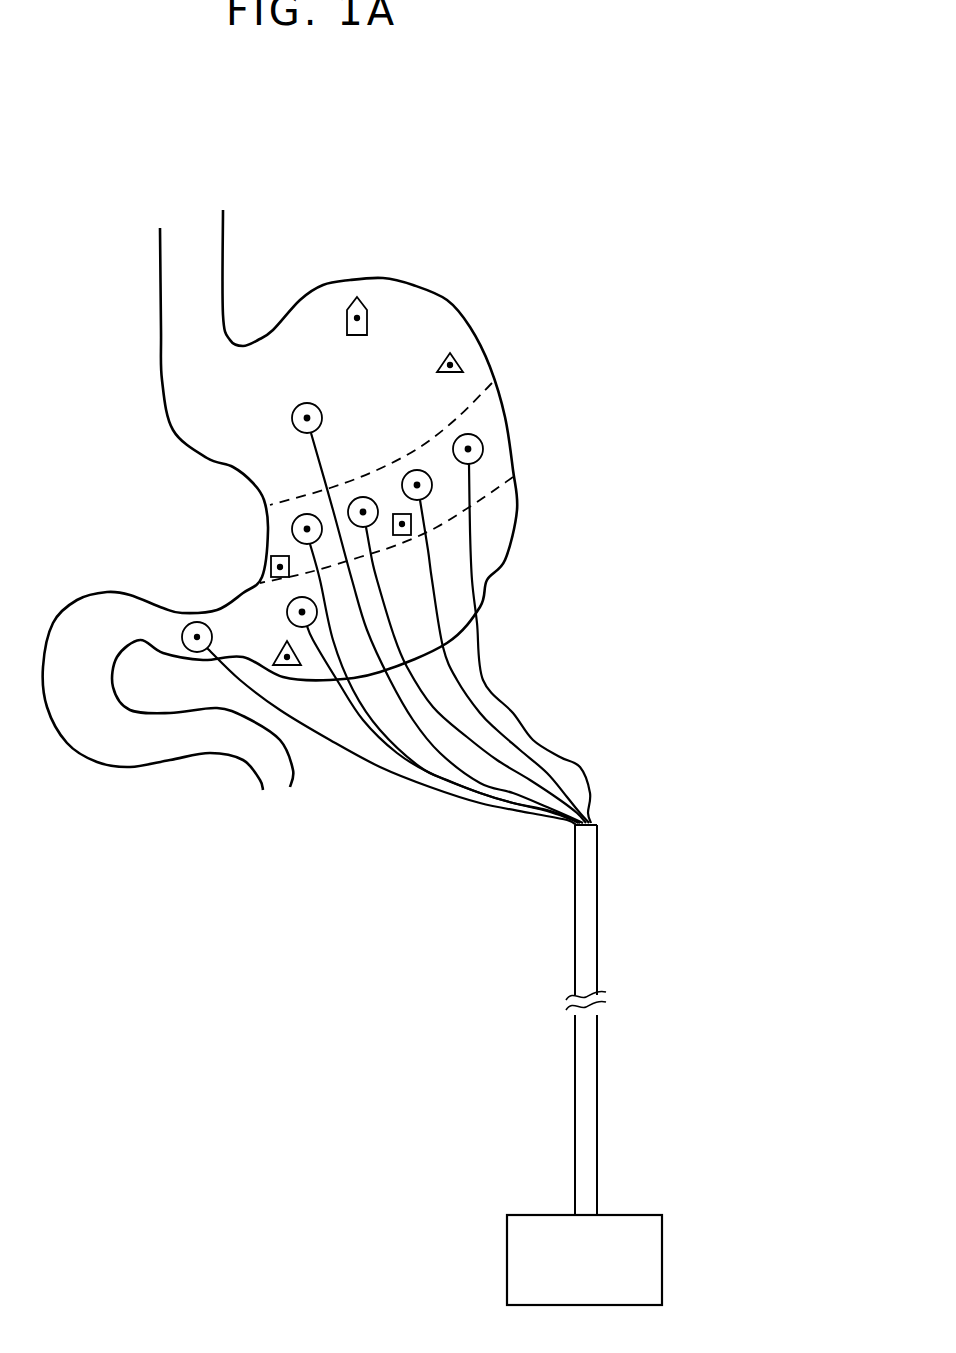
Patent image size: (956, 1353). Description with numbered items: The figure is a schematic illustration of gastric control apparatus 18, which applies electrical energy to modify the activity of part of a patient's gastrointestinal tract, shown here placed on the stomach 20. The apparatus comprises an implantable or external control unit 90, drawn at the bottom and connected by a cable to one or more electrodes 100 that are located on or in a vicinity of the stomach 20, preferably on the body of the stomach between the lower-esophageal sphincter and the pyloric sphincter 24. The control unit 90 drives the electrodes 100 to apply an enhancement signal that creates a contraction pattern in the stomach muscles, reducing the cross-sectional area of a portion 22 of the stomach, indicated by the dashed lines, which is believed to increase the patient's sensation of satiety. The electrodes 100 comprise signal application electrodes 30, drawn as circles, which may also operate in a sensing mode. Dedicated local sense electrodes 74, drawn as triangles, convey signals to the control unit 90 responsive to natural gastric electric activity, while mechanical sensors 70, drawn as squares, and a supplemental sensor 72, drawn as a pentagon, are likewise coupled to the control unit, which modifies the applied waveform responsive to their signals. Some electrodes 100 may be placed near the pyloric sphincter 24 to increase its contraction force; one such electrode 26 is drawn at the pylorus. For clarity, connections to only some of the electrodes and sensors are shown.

The gastric control apparatus 18 is at (338, 463).
The stomach 20 is at (313, 285).
The portion of the stomach 22 is at (473, 402).
The pyloric sphincter 24 is at (203, 655).
The pyloric electrode 26 is at (185, 625).
The signal application electrodes 30 is at (293, 412).
The mechanical sensors 70 is at (270, 560).
The supplemental sensors 72 is at (368, 318).
The local sense electrodes 74 is at (450, 353).
The control unit 90 is at (634, 1214).
The electrodes 100 is at (572, 531).